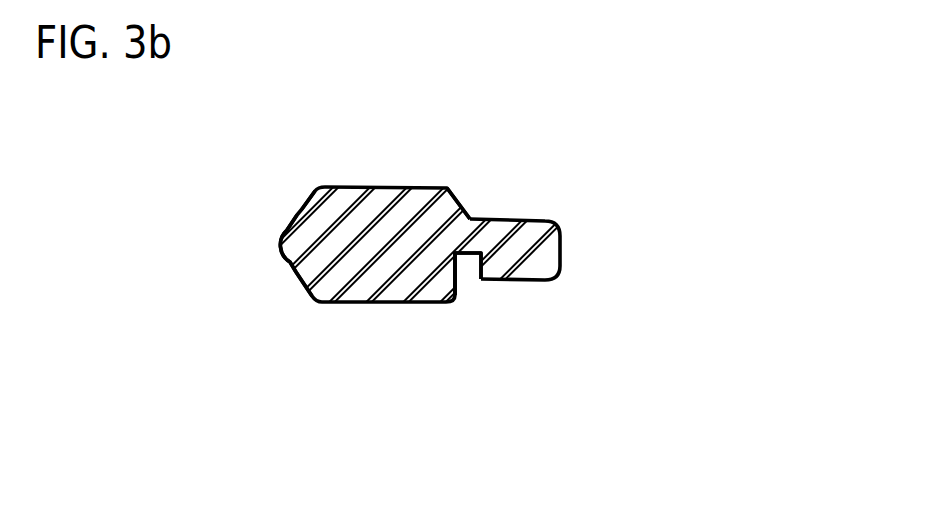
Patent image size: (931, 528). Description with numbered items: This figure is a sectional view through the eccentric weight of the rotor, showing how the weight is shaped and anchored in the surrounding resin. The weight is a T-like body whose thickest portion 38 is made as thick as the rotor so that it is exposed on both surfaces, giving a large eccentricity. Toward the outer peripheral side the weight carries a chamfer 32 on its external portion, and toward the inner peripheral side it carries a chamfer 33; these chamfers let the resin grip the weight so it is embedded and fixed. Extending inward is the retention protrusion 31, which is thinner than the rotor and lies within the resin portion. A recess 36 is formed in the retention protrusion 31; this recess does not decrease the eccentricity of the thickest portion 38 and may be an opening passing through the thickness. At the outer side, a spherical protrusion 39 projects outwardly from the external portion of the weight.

The retention protrusion 31 is at (697, 204).
The chamfer 32 is at (303, 283).
The chamfer 33 is at (623, 138).
The recess 36 is at (520, 407).
The thickest portion 38 is at (483, 98).
The spherical protrusion 39 is at (283, 238).